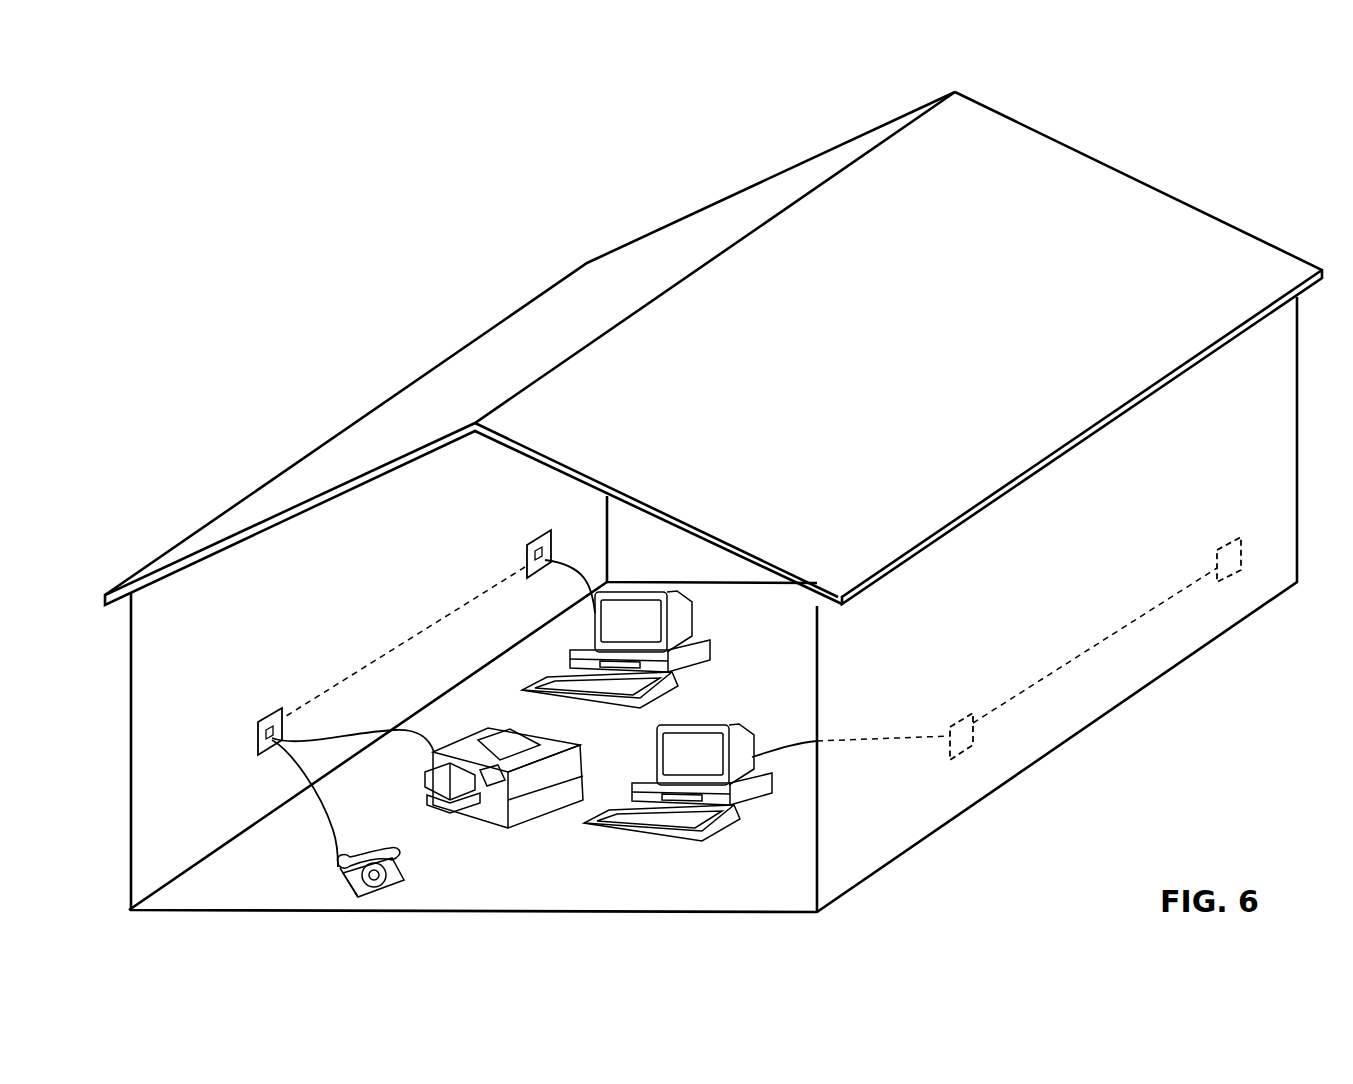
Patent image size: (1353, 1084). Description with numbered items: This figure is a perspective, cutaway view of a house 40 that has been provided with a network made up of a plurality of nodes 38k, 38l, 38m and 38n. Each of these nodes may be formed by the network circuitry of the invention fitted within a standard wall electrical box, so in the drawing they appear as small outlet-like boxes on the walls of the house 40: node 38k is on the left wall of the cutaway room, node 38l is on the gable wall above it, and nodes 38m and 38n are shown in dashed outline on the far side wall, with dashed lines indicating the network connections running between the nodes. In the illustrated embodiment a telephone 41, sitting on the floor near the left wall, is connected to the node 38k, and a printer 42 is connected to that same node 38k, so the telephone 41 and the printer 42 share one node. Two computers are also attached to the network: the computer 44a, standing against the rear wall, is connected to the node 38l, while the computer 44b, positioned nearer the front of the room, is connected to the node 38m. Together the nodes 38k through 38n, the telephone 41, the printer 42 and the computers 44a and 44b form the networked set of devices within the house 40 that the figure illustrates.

The house 40 is at (838, 364).
The node 38k is at (268, 722).
The node 38l is at (535, 542).
The node 38m is at (963, 752).
The node 38n is at (1232, 572).
The telephone 41 is at (360, 886).
The printer 42 is at (548, 805).
The computer 44a is at (685, 660).
The computer 44b is at (752, 795).